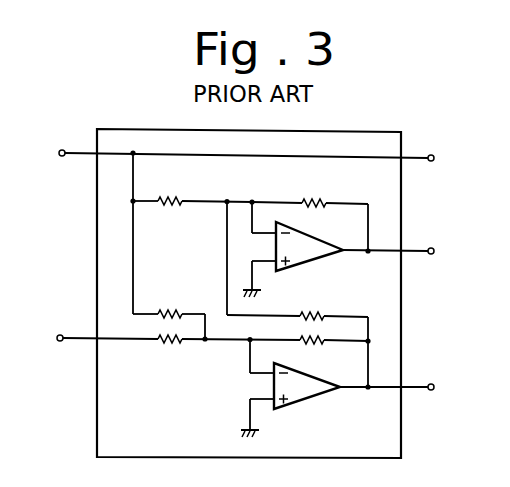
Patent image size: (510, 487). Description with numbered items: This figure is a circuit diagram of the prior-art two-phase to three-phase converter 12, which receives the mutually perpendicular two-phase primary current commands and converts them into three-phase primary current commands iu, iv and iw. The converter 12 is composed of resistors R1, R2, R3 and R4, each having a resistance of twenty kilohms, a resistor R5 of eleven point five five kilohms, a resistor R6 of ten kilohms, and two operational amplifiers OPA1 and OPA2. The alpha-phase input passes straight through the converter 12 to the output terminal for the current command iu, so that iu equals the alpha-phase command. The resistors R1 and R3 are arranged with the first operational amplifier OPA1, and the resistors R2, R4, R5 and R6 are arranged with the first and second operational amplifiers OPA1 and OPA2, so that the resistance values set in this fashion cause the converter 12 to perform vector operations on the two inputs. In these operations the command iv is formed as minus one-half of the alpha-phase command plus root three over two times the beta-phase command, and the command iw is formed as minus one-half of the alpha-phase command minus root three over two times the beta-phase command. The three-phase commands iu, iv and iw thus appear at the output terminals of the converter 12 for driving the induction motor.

The two-phase to three-phase converter 12 is at (401, 132).
The resistor R1 is at (175, 197).
The resistor R2 is at (174, 309).
The resistor R3 is at (324, 200).
The resistor R4 is at (318, 313).
The resistor R5 is at (171, 350).
The resistor R6 is at (310, 345).
The operational amplifier OPA1 is at (312, 262).
The operational amplifier OPA2 is at (308, 400).
The three-phase primary current command iu is at (443, 160).
The three-phase primary current command iv is at (443, 252).
The three-phase primary current command iw is at (445, 389).